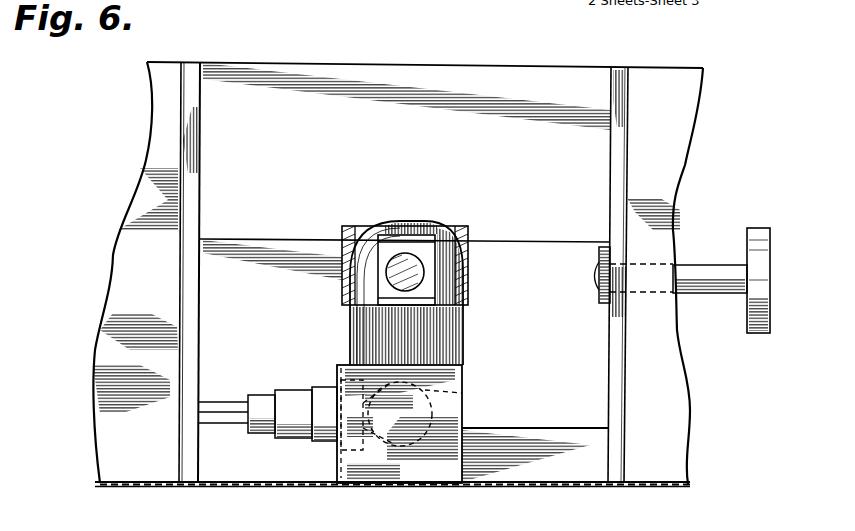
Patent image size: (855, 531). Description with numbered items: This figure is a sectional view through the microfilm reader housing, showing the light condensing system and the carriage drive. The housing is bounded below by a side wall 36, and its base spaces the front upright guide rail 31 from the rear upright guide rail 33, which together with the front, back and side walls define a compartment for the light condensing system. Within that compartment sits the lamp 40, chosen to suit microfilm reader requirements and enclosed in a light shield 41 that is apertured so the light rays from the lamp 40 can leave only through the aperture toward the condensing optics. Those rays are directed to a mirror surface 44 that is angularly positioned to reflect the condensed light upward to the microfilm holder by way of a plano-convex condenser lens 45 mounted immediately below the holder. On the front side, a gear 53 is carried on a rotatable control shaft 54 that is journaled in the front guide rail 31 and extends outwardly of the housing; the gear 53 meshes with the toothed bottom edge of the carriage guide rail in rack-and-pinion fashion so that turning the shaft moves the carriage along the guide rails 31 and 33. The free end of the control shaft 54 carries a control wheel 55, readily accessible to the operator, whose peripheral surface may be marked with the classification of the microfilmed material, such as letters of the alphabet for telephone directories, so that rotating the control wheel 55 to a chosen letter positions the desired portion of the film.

The front upright guide rail 31 is at (621, 352).
The rear upright guide rail 33 is at (197, 252).
The side wall 36 is at (311, 484).
The lamp 40 is at (462, 393).
The light shield 41 is at (462, 410).
The mirror surface 44 is at (465, 300).
The plano-convex condenser lens 45 is at (410, 272).
The gear 53 is at (605, 247).
The control shaft 54 is at (714, 282).
The control wheel 55 is at (760, 228).